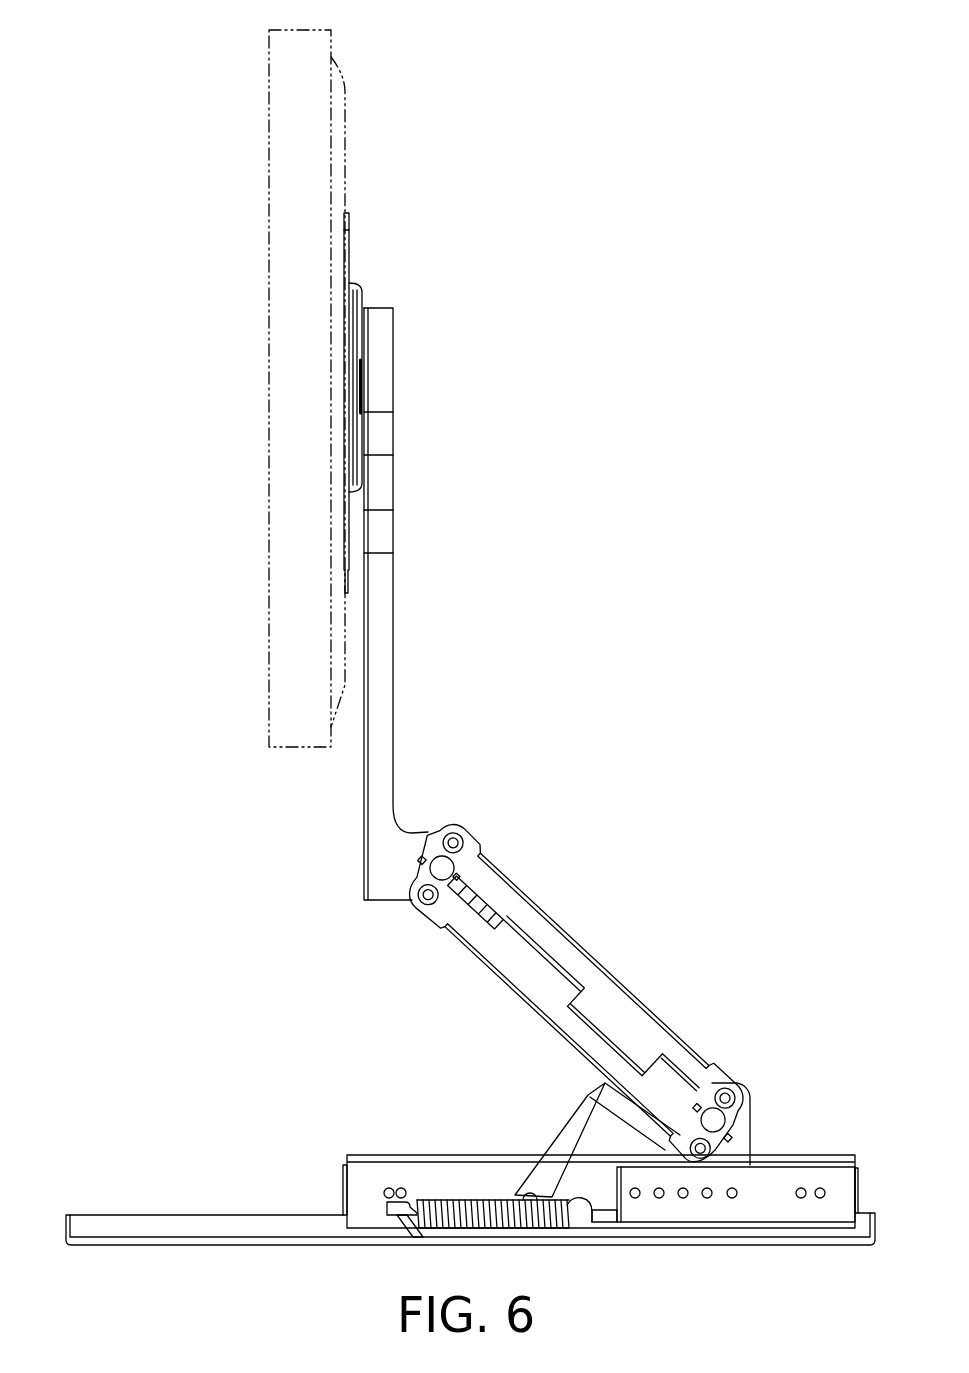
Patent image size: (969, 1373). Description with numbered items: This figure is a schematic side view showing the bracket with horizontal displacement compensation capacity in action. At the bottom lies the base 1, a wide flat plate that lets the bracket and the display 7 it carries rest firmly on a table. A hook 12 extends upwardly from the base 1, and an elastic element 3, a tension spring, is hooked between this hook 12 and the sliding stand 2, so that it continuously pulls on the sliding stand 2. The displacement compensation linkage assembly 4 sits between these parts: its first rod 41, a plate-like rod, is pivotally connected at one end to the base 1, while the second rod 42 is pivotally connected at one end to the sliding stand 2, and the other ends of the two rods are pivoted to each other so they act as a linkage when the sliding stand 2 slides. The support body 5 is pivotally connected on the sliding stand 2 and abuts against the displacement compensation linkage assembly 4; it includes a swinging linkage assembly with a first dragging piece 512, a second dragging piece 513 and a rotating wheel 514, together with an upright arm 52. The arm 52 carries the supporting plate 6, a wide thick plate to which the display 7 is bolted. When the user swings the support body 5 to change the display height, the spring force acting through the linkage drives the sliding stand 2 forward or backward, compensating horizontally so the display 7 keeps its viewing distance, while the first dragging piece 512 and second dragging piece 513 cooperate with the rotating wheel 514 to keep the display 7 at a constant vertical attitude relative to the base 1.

The base 1 is at (203, 1213).
The hook 12 is at (386, 1202).
The sliding stand 2 is at (753, 1137).
The elastic element 3 is at (465, 1202).
The displacement compensation linkage assembly 4 is at (616, 1105).
The first rod 41 is at (558, 1150).
The second rod 42 is at (650, 1130).
The support body 5 is at (576, 956).
The first dragging piece 512 is at (653, 886).
The second dragging piece 513 is at (643, 1023).
The rotating wheel 514 is at (424, 838).
The arm 52 is at (383, 683).
The supporting plate 6 is at (352, 258).
The display 7 is at (268, 152).